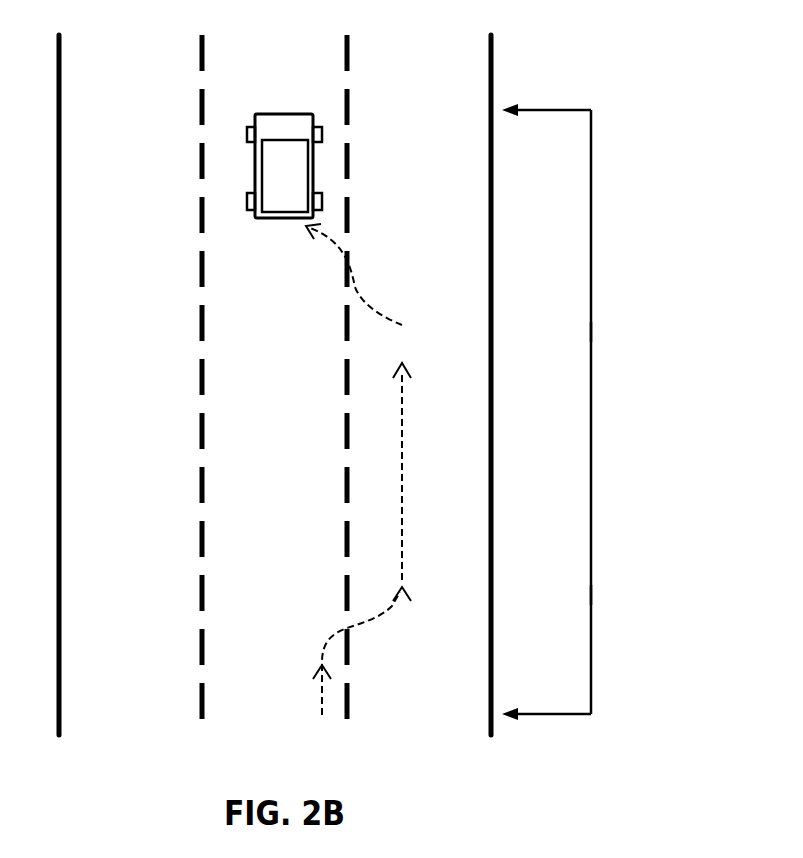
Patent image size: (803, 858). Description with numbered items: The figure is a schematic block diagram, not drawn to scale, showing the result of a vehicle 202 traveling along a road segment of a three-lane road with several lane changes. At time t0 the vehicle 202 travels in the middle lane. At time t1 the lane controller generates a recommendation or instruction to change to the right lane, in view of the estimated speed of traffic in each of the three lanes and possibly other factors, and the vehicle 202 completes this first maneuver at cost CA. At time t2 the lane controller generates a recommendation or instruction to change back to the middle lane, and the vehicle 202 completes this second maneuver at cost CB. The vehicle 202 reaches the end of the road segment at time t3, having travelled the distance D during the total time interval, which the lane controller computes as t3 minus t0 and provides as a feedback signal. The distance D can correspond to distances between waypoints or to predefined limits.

The vehicle 202 is at (302, 183).
The cost of first maneuver CA is at (362, 548).
The cost of second maneuver CB is at (354, 274).
The initial time t0 is at (565, 713).
The first lane-change time t1 is at (611, 593).
The second lane-change time t2 is at (608, 328).
The end time t3 is at (567, 103).
The distance D is at (656, 412).